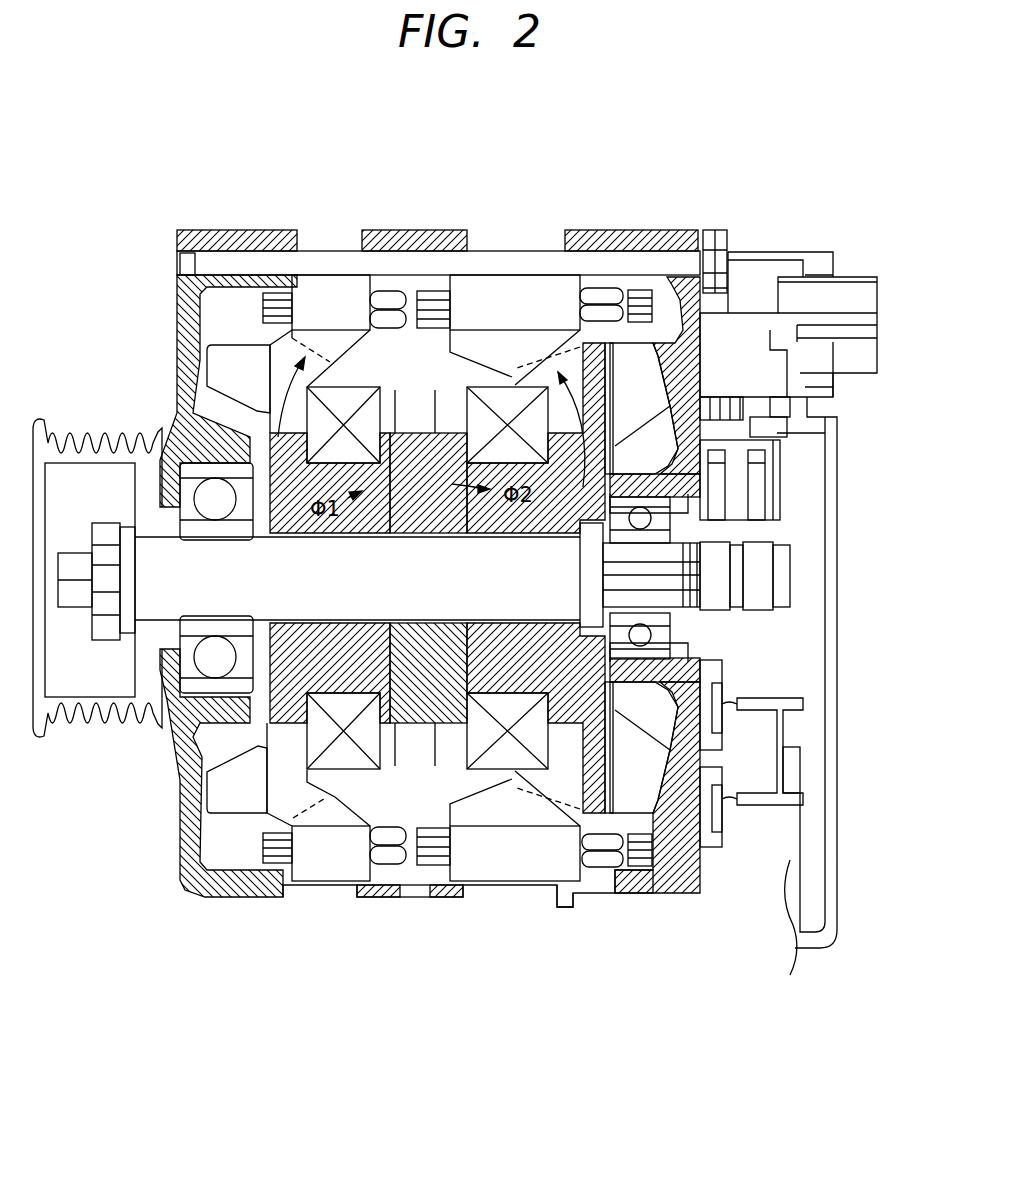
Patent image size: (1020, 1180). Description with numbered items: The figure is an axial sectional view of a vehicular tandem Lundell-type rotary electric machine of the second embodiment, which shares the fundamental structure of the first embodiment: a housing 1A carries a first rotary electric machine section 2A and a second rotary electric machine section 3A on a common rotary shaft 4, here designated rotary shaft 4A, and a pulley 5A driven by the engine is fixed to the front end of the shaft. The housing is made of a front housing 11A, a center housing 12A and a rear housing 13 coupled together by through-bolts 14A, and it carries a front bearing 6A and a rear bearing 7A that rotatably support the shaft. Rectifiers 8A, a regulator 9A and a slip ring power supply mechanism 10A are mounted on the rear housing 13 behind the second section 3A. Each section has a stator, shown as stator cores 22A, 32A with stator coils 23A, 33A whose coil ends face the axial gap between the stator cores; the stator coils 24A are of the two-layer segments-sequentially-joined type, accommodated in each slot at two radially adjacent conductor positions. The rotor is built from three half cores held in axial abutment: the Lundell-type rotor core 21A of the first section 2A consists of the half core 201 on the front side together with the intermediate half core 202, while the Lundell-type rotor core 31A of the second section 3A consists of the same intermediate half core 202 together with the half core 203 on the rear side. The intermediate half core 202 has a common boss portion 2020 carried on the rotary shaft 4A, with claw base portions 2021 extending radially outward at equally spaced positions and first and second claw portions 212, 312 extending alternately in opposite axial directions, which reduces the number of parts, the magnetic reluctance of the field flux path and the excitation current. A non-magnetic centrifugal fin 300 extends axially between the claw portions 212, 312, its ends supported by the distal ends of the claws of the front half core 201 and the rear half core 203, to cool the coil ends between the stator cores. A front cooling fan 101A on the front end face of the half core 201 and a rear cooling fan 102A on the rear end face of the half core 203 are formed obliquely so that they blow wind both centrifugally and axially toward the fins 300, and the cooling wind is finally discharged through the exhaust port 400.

The vehicle alternator 1A is at (233, 226).
The first rotary electric machine section 2A is at (347, 255).
The second rotary electric machine section 3A is at (505, 255).
The rotary shaft 4 is at (342, 606).
The rotary shaft 4A is at (160, 548).
The pulley 5A is at (80, 740).
The front bearing 6A is at (203, 690).
The rear bearing 7A is at (670, 530).
The rear cover 8A is at (750, 741).
The voltage regulator 9A is at (745, 297).
The brush device 10A is at (800, 496).
The front frame 11A is at (178, 298).
The center frame 12A is at (433, 232).
The rear housing 13 is at (617, 237).
The frame rim 14A is at (332, 252).
The Lundell-type rotor core 21A is at (292, 615).
The first stator core 22A is at (287, 750).
The first stator winding 23A is at (309, 262).
The stator coil 24A is at (387, 277).
The Lundell-type rotor core 31A is at (502, 615).
The second stator core 32A is at (556, 845).
The second stator winding 33A is at (537, 290).
The first pole core 101A is at (228, 362).
The second pole core 102A is at (633, 377).
The half core 201 is at (320, 640).
The intermediate half core 202 is at (413, 660).
The half core 203 is at (530, 643).
The first claw portion 212 is at (187, 880).
The centrifugal fin 300 is at (440, 345).
The second claw portion 312 is at (500, 813).
The exhaust port 400 is at (417, 893).
The common boss portion 2020 is at (427, 677).
The claw base portion 2021 is at (430, 760).